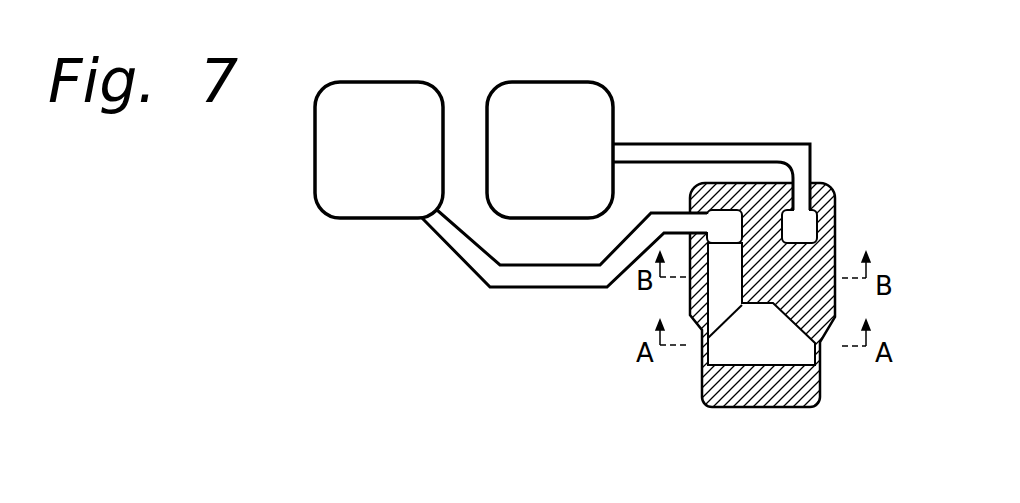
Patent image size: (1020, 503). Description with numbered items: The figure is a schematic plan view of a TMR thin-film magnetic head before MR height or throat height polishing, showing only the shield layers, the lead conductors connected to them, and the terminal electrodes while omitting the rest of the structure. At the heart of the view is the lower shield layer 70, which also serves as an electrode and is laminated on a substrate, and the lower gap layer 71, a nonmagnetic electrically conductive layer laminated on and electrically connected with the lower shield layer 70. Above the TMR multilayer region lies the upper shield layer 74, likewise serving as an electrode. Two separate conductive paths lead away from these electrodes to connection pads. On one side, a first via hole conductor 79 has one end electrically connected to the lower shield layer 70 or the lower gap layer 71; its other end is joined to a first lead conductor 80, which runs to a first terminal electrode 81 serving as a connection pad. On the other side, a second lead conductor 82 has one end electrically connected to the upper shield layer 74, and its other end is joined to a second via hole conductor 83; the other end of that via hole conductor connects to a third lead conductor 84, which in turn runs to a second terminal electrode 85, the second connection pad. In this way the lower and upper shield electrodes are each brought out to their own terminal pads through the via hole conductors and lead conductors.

The lower shield layer 70 is at (792, 326).
The lower gap layer 71 is at (808, 398).
The upper shield layer 74 is at (722, 353).
The first via hole conductor 79 is at (803, 223).
The first lead conductor 80 is at (768, 148).
The first terminal electrode 81 is at (559, 96).
The second lead conductor 82 is at (715, 288).
The second via hole conductor 83 is at (722, 217).
The third lead conductor 84 is at (507, 282).
The second terminal electrode 85 is at (377, 96).